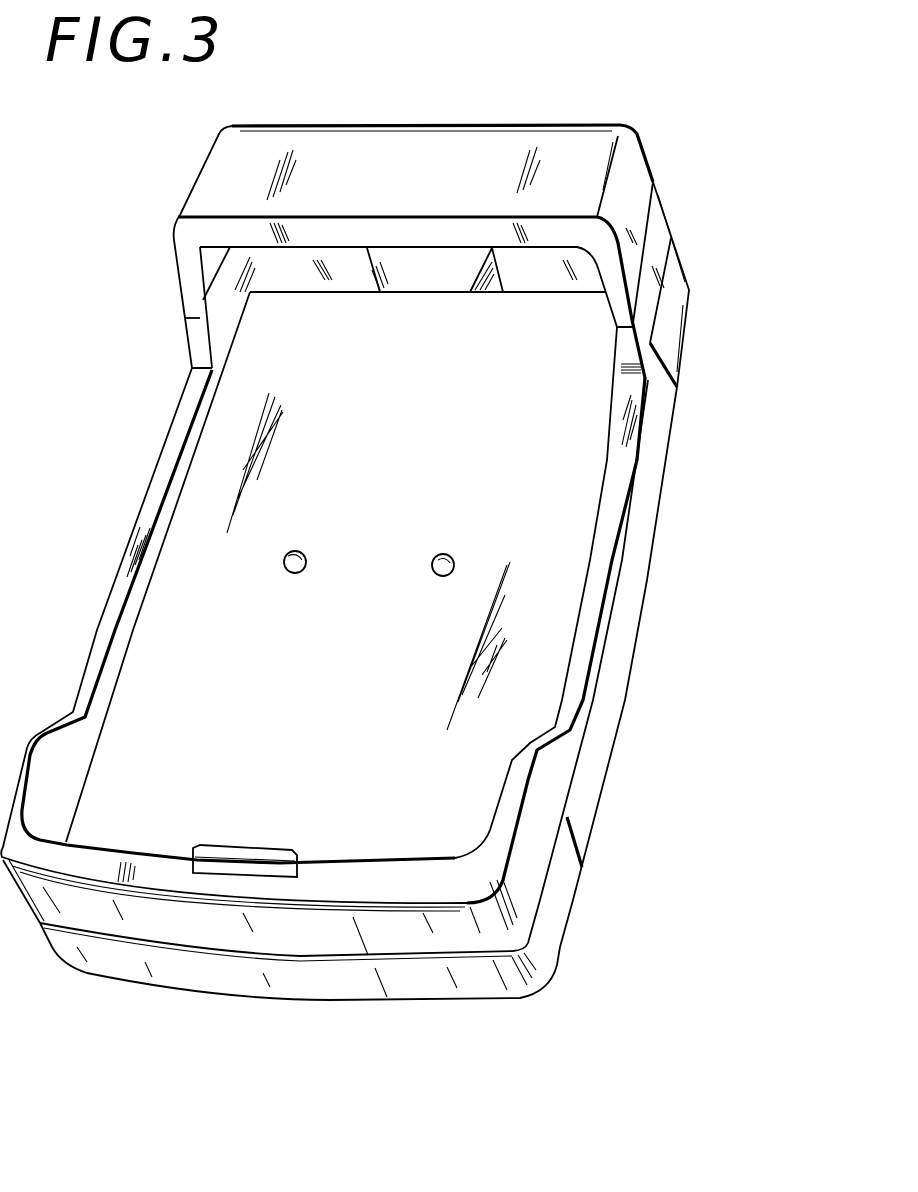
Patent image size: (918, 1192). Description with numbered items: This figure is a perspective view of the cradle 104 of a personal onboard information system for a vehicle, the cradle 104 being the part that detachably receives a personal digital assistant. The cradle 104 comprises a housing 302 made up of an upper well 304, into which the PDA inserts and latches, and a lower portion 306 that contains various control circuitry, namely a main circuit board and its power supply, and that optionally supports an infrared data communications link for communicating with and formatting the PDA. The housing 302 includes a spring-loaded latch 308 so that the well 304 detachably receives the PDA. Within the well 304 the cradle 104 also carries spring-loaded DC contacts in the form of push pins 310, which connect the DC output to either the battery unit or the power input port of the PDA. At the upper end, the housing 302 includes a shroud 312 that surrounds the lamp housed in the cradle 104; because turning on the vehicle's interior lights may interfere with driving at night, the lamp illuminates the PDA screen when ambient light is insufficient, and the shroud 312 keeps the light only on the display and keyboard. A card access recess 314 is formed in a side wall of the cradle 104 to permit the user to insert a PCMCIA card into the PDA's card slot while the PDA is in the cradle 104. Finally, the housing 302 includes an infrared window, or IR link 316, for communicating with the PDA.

The cradle 104 is at (650, 174).
The housing 302 is at (187, 343).
The upper well 304 is at (437, 488).
The lower portion 306 is at (673, 311).
The spring-loaded latch 308 is at (280, 843).
The push pins 310 is at (307, 567).
The shroud 312 is at (340, 155).
The card access recess 314 is at (593, 623).
The IR link 316 is at (410, 293).